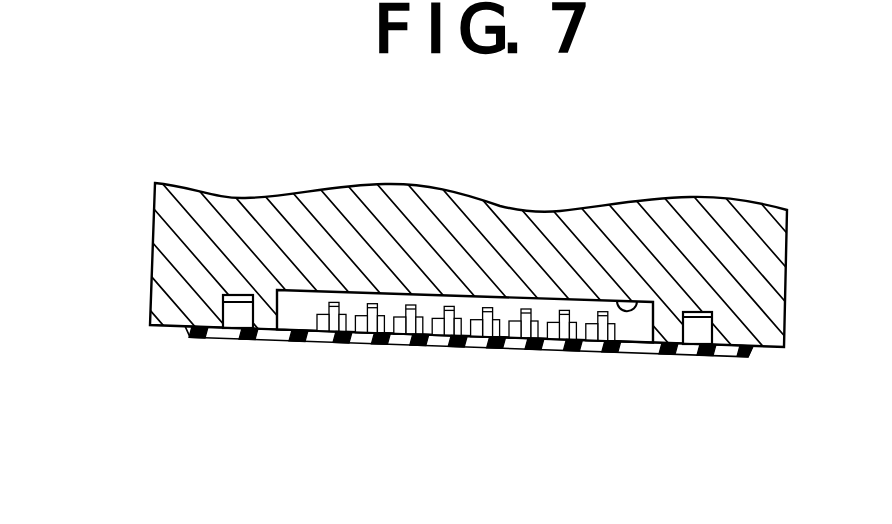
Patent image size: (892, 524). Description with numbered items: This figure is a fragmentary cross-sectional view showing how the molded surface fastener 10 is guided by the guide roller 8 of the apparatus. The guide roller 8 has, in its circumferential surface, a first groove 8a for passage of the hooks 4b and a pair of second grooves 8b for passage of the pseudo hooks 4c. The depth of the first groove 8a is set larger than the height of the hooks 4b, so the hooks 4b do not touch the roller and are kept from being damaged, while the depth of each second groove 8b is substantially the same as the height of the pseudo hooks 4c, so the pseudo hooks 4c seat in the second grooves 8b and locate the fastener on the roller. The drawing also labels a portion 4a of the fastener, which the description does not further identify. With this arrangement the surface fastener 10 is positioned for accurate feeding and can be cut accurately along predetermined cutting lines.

The guide roller 8 is at (147, 252).
The first groove 8a is at (635, 302).
The second groove 8b is at (207, 328).
The connector housing 4a is at (602, 352).
The hooks 4b is at (329, 303).
The pseudo hooks 4c is at (228, 323).
The surface fastener 10 is at (480, 361).